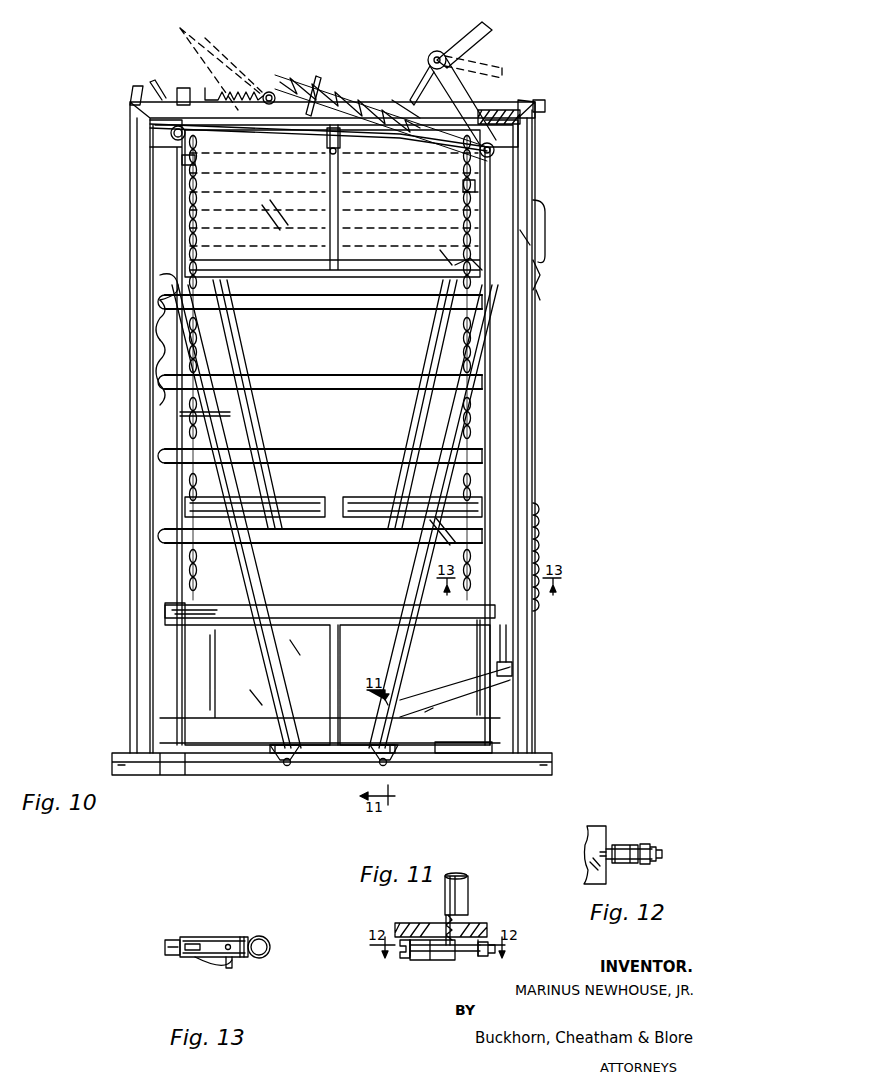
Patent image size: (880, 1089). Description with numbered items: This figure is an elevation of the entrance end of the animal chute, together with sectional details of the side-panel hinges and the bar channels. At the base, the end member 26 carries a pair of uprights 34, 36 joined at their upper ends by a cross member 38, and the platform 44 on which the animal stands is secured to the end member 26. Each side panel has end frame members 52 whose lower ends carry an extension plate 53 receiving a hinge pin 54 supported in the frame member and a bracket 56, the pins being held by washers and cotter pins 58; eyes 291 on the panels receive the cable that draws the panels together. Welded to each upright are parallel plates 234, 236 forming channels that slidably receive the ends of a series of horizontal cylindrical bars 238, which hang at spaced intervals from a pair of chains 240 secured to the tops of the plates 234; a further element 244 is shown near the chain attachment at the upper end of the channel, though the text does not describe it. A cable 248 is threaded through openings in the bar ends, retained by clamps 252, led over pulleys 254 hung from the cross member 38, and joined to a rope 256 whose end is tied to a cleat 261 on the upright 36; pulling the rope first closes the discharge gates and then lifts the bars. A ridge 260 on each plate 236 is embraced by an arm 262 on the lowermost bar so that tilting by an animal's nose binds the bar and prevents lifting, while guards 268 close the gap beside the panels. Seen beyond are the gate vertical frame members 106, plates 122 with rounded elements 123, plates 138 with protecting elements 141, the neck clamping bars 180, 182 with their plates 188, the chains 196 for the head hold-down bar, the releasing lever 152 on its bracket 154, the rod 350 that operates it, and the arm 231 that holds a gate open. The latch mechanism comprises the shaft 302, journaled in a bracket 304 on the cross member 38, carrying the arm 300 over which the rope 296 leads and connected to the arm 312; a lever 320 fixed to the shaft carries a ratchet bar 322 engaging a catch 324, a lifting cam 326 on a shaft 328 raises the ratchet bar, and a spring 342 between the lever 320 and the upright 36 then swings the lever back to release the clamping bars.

In FIG. 10, the end member 26 is at (538, 752).
In FIG. 11, the end member 26 is at (428, 962).
In FIG. 12, the end member 26 is at (590, 838).
In FIG. 10, the upright 34 is at (128, 357).
In FIG. 10, the upright 36 is at (530, 285).
In FIG. 13, the upright 36 is at (272, 947).
In FIG. 10, the cross member 38 is at (518, 102).
In FIG. 10, the platform 44 is at (292, 752).
In FIG. 11, the platform 44 is at (470, 924).
In FIG. 10, the end frame member 52 is at (222, 478).
In FIG. 11, the end frame member 52 is at (457, 873).
In FIG. 11, the extension plate 53 is at (445, 918).
In FIG. 12, the extension plate 53 is at (632, 864).
In FIG. 10, the hinge pin 54 is at (285, 766).
In FIG. 11, the hinge pin 54 is at (450, 960).
In FIG. 12, the hinge pin 54 is at (600, 854).
In FIG. 11, the bracket 56 is at (482, 957).
In FIG. 12, the bracket 56 is at (655, 844).
In FIG. 11, the washers and cotter pins 58 is at (400, 958).
In FIG. 10, the vertical frame member 106 is at (481, 700).
In FIG. 10, the plate 122 is at (465, 185).
In FIG. 10, the rounded element 123 is at (465, 262).
In FIG. 10, the plate 138 is at (447, 550).
In FIG. 10, the rounded protecting element 141 is at (470, 503).
In FIG. 10, the releasing lever 152 is at (508, 668).
In FIG. 10, the bracket 154 is at (425, 705).
In FIG. 10, the neck clamping bar 180 is at (412, 428).
In FIG. 10, the neck clamping bar 182 is at (250, 428).
In FIG. 10, the plate 188 is at (178, 415).
In FIG. 10, the chain 196 is at (540, 563).
In FIG. 10, the arm 231 is at (468, 742).
In FIG. 10, the plate 234 is at (162, 317).
In FIG. 13, the plate 234 is at (225, 936).
In FIG. 10, the plate 236 is at (158, 282).
In FIG. 13, the plate 236 is at (246, 960).
In FIG. 10, the cylindrical bar 238 is at (195, 252).
In FIG. 13, the cylindrical bar 238 is at (166, 947).
In FIG. 10, the chain 240 is at (195, 205).
In FIG. 13, the chain 240 is at (192, 942).
In FIG. 10, the bracket 244 is at (185, 162).
In FIG. 10, the cable 248 is at (177, 337).
In FIG. 13, the cable 248 is at (232, 944).
In FIG. 10, the clamp 252 is at (168, 612).
In FIG. 10, the pulley 254 is at (150, 127).
In FIG. 10, the rope 256 is at (172, 138).
In FIG. 10, the ridge 260 is at (165, 263).
In FIG. 13, the ridge 260 is at (215, 965).
In FIG. 10, the cleat 261 is at (540, 200).
In FIG. 10, the arm 262 is at (170, 610).
In FIG. 13, the arm 262 is at (228, 970).
In FIG. 10, the guard 268 is at (262, 666).
In FIG. 10, the eye 291 is at (133, 88).
In FIG. 10, the rope 296 is at (153, 80).
In FIG. 10, the arm 300 is at (492, 70).
In FIG. 10, the shaft 302 is at (440, 42).
In FIG. 10, the bracket 304 is at (425, 66).
In FIG. 10, the arm 312 is at (182, 88).
In FIG. 10, the lever 320 is at (415, 105).
In FIG. 10, the ratchet bar 322 is at (213, 52).
In FIG. 10, the catch 324 is at (318, 78).
In FIG. 10, the lifting cam 326 is at (232, 80).
In FIG. 10, the shaft 328 is at (268, 92).
In FIG. 10, the spring 342 is at (536, 108).
In FIG. 10, the rod 350 is at (505, 648).